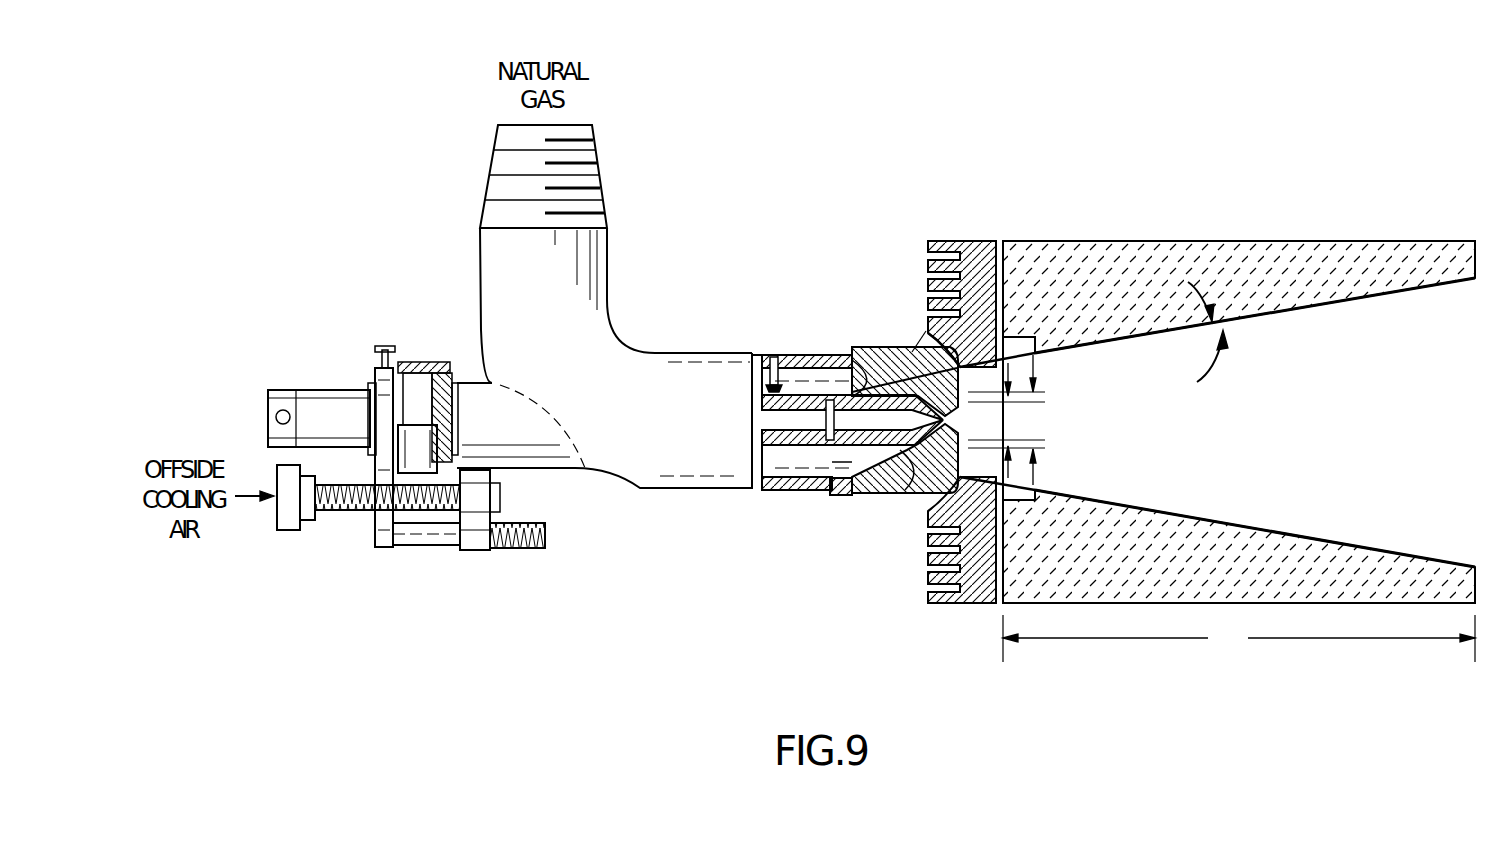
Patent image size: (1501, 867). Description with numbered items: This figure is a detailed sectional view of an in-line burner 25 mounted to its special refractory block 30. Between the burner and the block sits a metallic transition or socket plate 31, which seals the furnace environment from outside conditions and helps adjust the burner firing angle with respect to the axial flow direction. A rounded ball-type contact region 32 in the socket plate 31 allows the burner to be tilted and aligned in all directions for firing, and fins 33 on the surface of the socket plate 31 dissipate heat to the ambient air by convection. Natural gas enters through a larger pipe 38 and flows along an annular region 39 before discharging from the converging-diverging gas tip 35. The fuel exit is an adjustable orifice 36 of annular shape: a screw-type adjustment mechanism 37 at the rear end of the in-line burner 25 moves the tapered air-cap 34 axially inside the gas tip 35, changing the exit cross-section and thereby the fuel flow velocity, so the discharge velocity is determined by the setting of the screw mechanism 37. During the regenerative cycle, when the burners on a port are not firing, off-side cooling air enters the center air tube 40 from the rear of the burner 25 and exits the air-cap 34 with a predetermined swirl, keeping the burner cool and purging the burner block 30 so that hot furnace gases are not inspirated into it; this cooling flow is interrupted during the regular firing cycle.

The in-line burner 25 is at (684, 490).
The refractory block 30 is at (1263, 241).
The socket plate 31 is at (975, 250).
The rounded ball-type contact region 32 is at (940, 337).
The fins 33 is at (926, 603).
The tapered air-cap 34 is at (857, 350).
The converging-diverging gas tip 35 is at (873, 493).
The adjustable orifice 36 is at (905, 490).
The screw-type adjustment mechanism 37 is at (347, 513).
The larger pipe 38 is at (604, 180).
The annular region 39 is at (789, 375).
The center air tube 40 is at (322, 392).